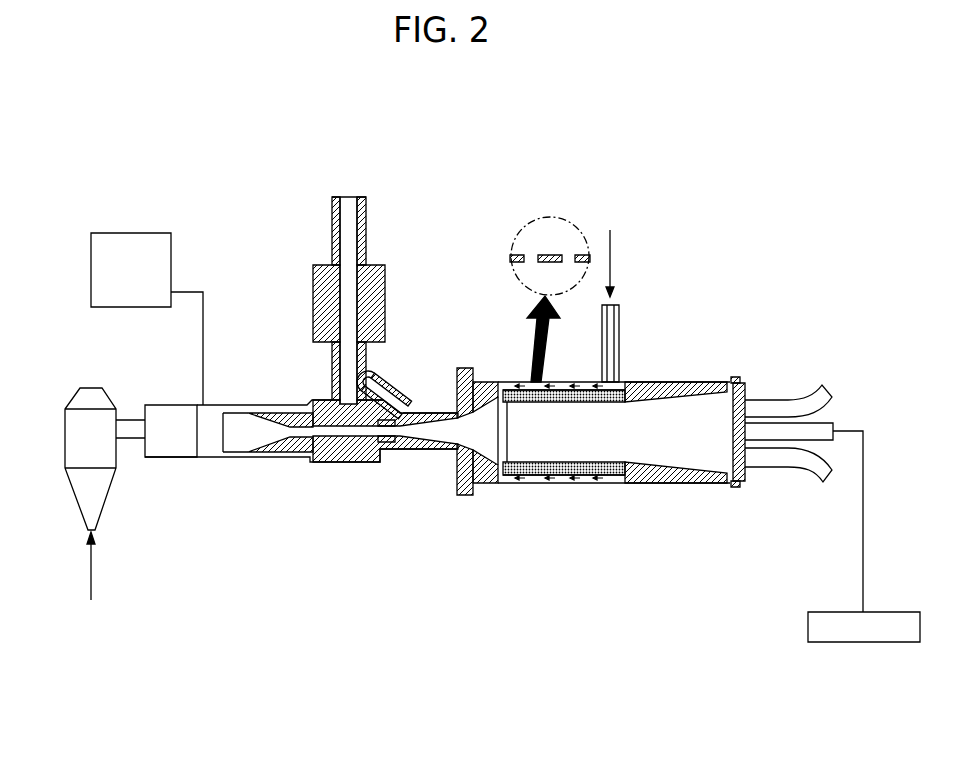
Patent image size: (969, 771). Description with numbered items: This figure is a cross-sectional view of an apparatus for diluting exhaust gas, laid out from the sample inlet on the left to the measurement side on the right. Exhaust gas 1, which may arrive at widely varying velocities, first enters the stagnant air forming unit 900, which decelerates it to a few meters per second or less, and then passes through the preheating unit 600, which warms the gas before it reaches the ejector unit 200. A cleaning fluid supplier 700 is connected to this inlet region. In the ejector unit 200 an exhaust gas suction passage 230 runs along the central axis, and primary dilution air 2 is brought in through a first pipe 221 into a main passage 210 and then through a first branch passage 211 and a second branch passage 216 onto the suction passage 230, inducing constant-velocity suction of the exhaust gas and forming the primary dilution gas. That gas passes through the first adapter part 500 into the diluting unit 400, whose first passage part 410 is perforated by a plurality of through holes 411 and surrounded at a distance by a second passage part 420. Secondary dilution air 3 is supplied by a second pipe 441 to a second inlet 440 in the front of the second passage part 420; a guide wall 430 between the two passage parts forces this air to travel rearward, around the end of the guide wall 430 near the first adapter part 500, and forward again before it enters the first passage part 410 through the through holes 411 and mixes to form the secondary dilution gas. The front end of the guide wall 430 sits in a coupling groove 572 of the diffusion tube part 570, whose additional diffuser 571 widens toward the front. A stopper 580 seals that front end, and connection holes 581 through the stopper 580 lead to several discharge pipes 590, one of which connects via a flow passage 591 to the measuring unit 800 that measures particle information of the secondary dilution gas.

The exhaust gas 1 is at (88, 563).
The primary dilution air 2 is at (349, 192).
The secondary dilution air 3 is at (567, 252).
The ejector unit 200 is at (298, 308).
The main passage 210 is at (347, 290).
The first branch passage 211 is at (318, 412).
The second branch passage 216 is at (378, 383).
The first pipe 221 is at (332, 218).
The exhaust gas suction passage 230 is at (265, 447).
The diluting unit 400 is at (476, 381).
The first passage part 410 is at (538, 252).
The through holes 411 is at (523, 252).
The second passage part 420 is at (603, 488).
The guide wall 430 is at (572, 488).
The second inlet 440 is at (627, 380).
The second pipe 441 is at (620, 333).
The first adapter part 500 is at (467, 369).
The diffusion tube part 570 is at (686, 416).
The additional diffuser 571 is at (683, 380).
The coupling groove 572 is at (645, 488).
The stopper 580 is at (735, 495).
The connection hole 581 is at (722, 490).
The discharge pipe 590 is at (818, 447).
The flow passage 591 is at (862, 562).
The preheating unit 600 is at (180, 410).
The cleaning fluid supplier 700 is at (145, 233).
The measuring unit 800 is at (850, 645).
The stagnant air forming unit 900 is at (77, 390).